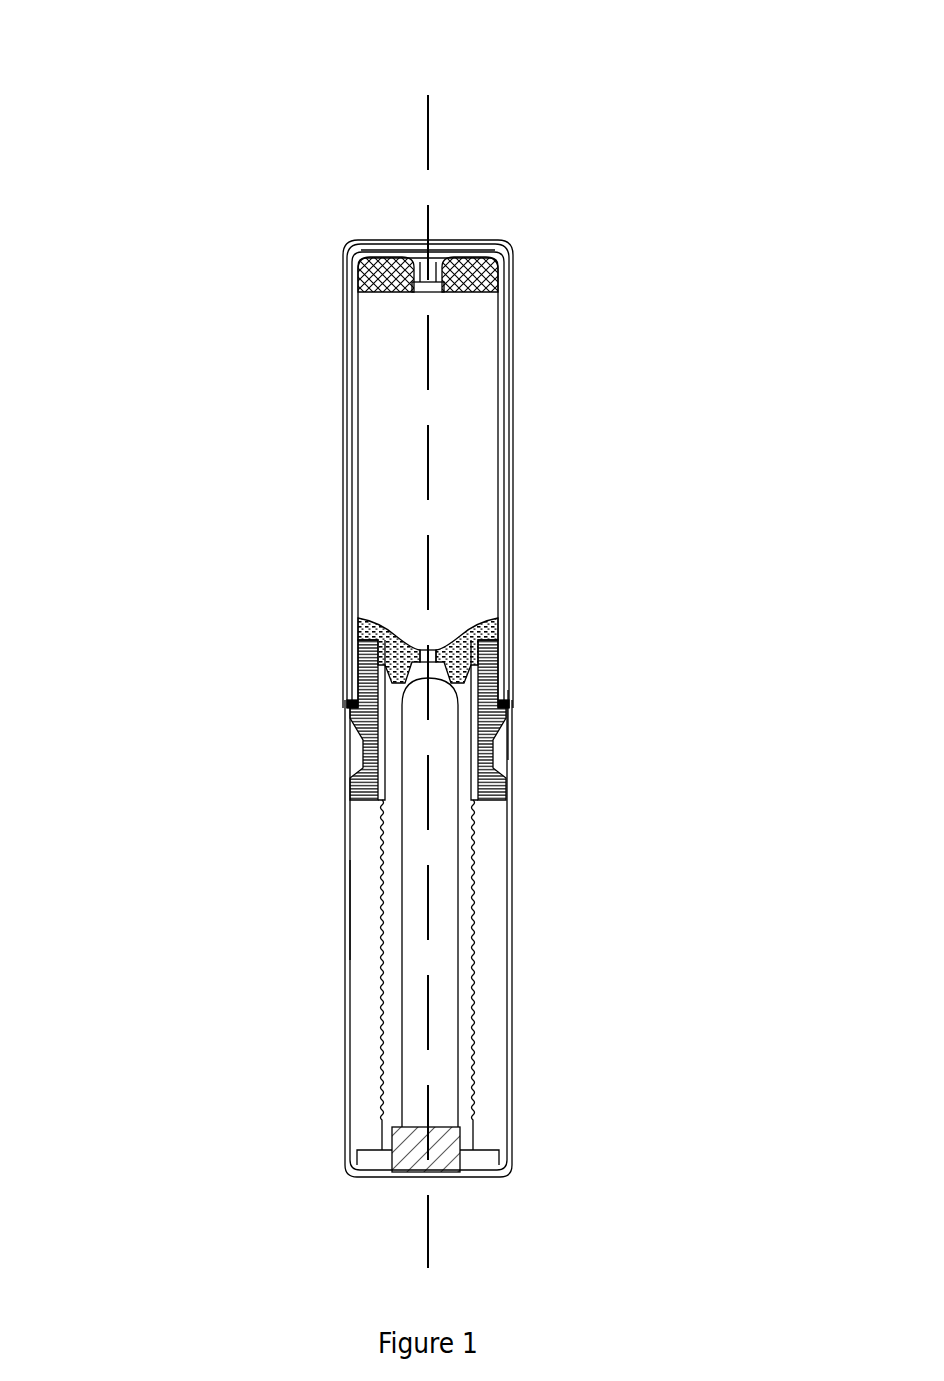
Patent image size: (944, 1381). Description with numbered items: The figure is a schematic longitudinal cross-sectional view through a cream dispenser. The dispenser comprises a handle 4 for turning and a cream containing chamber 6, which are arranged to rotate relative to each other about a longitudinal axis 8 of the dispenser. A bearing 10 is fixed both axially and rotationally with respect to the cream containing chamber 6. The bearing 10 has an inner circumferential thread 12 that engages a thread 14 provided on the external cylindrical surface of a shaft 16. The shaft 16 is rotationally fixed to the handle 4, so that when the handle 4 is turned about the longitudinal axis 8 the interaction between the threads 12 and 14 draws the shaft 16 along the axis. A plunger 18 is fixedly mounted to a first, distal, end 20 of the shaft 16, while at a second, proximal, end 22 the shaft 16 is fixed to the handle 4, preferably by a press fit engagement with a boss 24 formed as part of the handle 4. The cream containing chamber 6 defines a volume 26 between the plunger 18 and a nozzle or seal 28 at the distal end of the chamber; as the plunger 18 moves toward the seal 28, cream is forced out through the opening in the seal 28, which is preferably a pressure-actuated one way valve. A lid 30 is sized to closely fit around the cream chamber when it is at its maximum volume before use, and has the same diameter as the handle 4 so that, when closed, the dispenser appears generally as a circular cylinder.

The handle 4 is at (512, 965).
The cream containing chamber 6 is at (500, 340).
The longitudinal axis 8 is at (423, 105).
The bearing 10 is at (508, 690).
The inner circumferential thread 12 is at (380, 765).
The thread 14 is at (470, 838).
The shaft 16 is at (355, 910).
The plunger 18 is at (360, 620).
The first distal end 20 is at (395, 688).
The second proximal end 22 is at (388, 1145).
The boss 24 is at (470, 1145).
The volume 26 is at (400, 397).
The seal 28 is at (350, 254).
The lid 30 is at (463, 246).